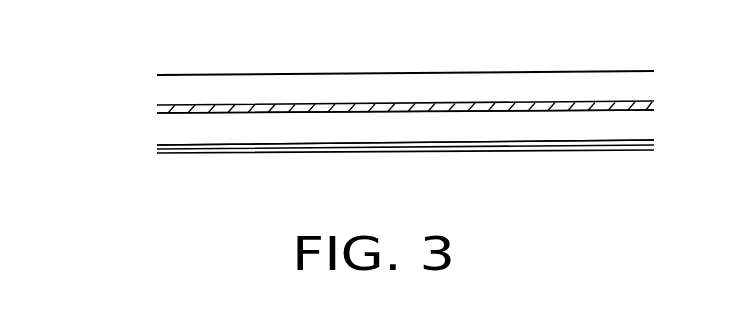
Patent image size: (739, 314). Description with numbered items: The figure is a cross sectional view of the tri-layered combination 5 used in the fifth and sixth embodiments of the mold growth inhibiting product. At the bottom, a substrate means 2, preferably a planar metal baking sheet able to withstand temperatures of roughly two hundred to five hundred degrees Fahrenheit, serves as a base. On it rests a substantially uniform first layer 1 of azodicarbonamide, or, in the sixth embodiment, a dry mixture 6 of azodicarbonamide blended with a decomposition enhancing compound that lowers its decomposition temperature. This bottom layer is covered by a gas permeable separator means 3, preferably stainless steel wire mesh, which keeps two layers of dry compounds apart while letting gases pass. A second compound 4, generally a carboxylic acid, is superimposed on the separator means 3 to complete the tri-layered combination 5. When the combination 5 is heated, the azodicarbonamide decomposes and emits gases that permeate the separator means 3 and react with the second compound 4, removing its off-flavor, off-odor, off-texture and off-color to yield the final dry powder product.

The first layer 1 is at (177, 130).
The substrate means 2 is at (223, 153).
The separator means 3 is at (654, 106).
The second compound 4 is at (302, 87).
The tri-layered combination 5 is at (68, 52).
The dry mixture 6 is at (372, 121).